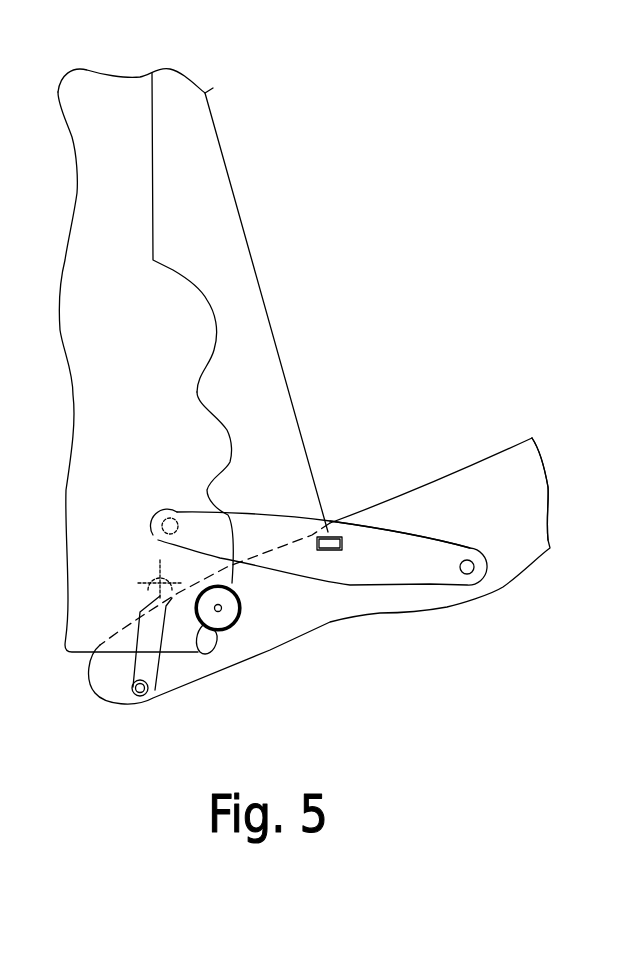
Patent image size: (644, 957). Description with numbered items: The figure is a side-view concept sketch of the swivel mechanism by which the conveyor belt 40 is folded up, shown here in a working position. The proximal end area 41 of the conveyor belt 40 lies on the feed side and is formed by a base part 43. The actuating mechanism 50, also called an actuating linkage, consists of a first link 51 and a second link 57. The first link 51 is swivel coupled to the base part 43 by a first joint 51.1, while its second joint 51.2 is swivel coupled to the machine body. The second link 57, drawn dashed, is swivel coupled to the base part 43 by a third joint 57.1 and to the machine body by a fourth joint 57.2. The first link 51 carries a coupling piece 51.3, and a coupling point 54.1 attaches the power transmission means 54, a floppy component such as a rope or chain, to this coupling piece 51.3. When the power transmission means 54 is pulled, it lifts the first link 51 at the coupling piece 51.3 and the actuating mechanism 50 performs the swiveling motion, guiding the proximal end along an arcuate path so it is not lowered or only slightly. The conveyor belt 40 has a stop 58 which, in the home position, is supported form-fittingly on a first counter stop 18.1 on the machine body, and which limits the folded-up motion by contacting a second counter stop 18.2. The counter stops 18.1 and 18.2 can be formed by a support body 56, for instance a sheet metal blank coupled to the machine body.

The first counter stop 18.1 is at (199, 656).
The second counter stop 18.2 is at (203, 487).
The conveyor belt 40 is at (525, 428).
The proximal end area 41 is at (272, 534).
The base part 43 is at (473, 493).
The actuating mechanism 50 is at (460, 448).
The first link 51 is at (375, 550).
The first joint 51.1 is at (473, 571).
The second joint 51.2 is at (166, 514).
The coupling piece 51.3 is at (337, 550).
The power transmission means 54 is at (230, 184).
The coupling point 54.1 is at (333, 531).
The support body 56 is at (167, 310).
The second link 57 is at (142, 617).
The third joint 57.1 is at (132, 697).
The fourth joint 57.2 is at (157, 575).
The stop 58 is at (218, 608).